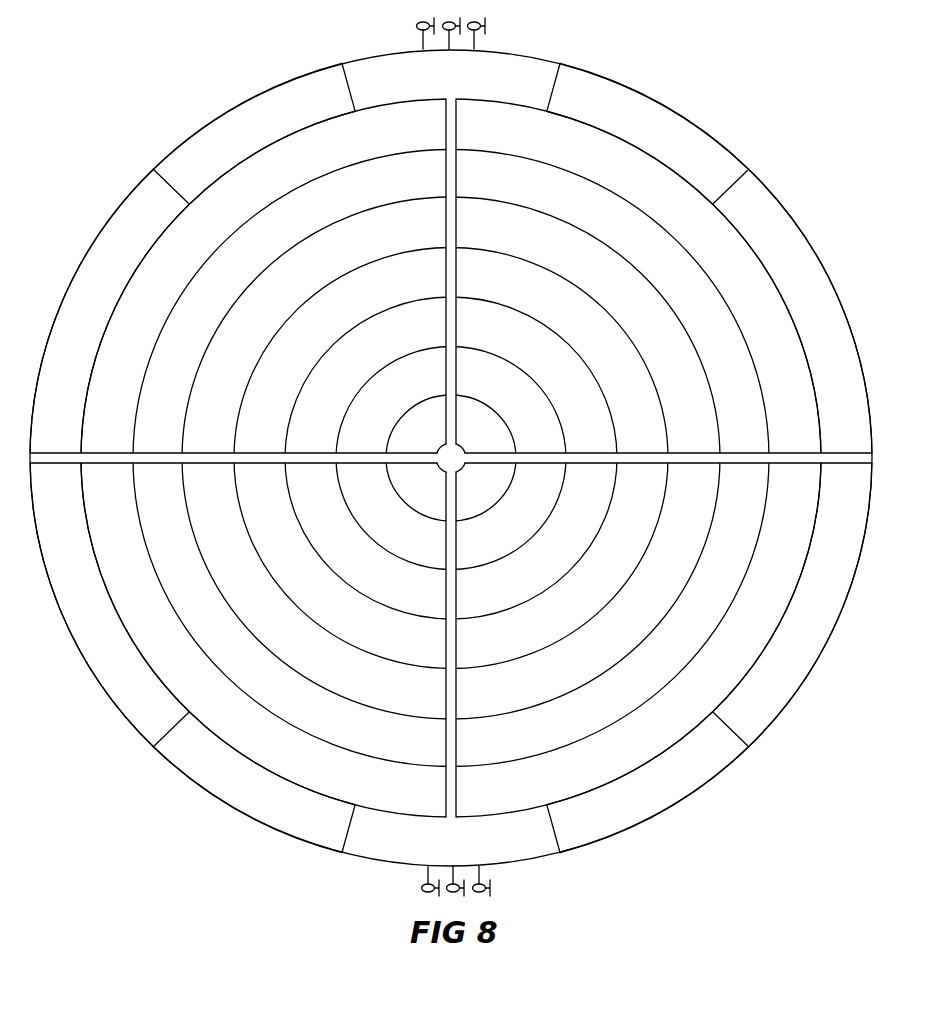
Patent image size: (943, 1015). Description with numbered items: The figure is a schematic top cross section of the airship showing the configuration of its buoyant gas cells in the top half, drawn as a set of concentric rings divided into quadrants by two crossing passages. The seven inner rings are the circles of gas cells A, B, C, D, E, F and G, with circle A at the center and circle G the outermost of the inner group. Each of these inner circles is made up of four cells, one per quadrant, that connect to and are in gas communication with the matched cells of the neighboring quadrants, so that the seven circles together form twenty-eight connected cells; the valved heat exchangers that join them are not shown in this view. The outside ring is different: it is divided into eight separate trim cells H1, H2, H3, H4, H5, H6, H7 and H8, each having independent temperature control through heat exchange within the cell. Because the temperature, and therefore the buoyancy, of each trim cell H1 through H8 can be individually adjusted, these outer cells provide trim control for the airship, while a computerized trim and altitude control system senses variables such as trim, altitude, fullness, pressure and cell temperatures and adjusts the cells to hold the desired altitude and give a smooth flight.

The buoyant gas cell circle A is at (434, 432).
The buoyant gas cell circle B is at (434, 376).
The buoyant gas cell circle C is at (434, 321).
The buoyant gas cell circle D is at (434, 268).
The buoyant gas cell circle E is at (434, 220).
The buoyant gas cell circle F is at (434, 171).
The buoyant gas cell circle G is at (434, 120).
The trim cell H1 is at (167, 209).
The trim cell H2 is at (315, 100).
The trim cell H3 is at (630, 117).
The trim cell H4 is at (796, 235).
The trim cell H5 is at (780, 696).
The trim cell H6 is at (639, 801).
The trim cell H7 is at (326, 829).
The trim cell H8 is at (171, 707).